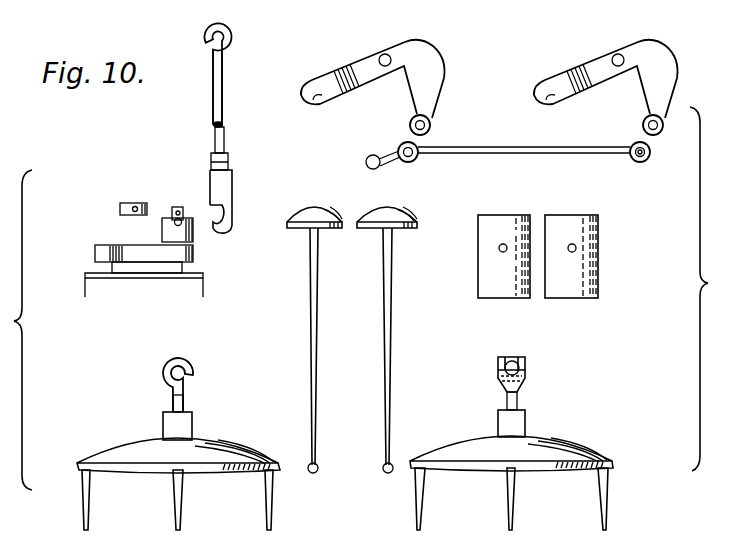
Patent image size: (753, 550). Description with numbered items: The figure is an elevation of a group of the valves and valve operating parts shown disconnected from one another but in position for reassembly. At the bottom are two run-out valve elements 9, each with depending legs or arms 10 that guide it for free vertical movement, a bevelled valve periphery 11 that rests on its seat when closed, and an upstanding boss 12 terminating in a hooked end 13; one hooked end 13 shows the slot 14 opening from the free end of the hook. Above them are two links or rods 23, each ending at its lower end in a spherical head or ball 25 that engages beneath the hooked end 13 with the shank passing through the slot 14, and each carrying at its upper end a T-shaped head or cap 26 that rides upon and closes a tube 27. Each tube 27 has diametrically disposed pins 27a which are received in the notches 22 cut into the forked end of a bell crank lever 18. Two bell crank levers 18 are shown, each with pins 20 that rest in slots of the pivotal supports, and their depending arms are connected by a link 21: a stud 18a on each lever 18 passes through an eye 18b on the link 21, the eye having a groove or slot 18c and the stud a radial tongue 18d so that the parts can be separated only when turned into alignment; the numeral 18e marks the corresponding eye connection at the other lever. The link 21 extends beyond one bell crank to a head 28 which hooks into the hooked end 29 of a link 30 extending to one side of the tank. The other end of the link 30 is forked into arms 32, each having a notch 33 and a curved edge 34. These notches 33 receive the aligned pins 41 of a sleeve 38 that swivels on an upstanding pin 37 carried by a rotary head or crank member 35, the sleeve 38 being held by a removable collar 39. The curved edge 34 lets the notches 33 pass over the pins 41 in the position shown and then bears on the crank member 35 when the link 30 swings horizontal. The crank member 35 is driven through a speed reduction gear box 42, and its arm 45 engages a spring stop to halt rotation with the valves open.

The run-out valve element 9 is at (127, 447).
The depending legs or arms 10 is at (177, 493).
The bevelled valve periphery 11 is at (233, 458).
The upstanding boss 12 is at (178, 422).
The hooked end 13 is at (190, 368).
The slot 14 is at (515, 360).
The bell crank lever 18 is at (428, 51).
The stud 18a is at (650, 118).
The eye 18b is at (685, 180).
The groove or slot 18c is at (402, 147).
The radial tongue 18d is at (694, 142).
The pivot 18e is at (633, 147).
The pins 20 is at (384, 55).
The link 21 is at (556, 147).
The notches 22 is at (309, 88).
The link or rod 23 is at (388, 353).
The spherical head or ball 25 is at (383, 468).
The T-shaped head or cap 26 is at (371, 226).
The tube 27 is at (538, 256).
The pins 27a is at (572, 243).
The head 28 is at (365, 160).
The hooked end 29 is at (207, 38).
The link 30 is at (213, 98).
The forked arms 32 is at (231, 205).
The notch 33 is at (212, 220).
The curved edge 34 is at (238, 225).
The rotary head or crank member 35 is at (146, 252).
The upstanding pin 37 is at (177, 210).
The sleeve 38 is at (162, 229).
The removable collar 39 is at (120, 208).
The aligned pins 41 is at (179, 226).
The speed reduction gear box 42 is at (88, 290).
The arm 45 is at (95, 257).